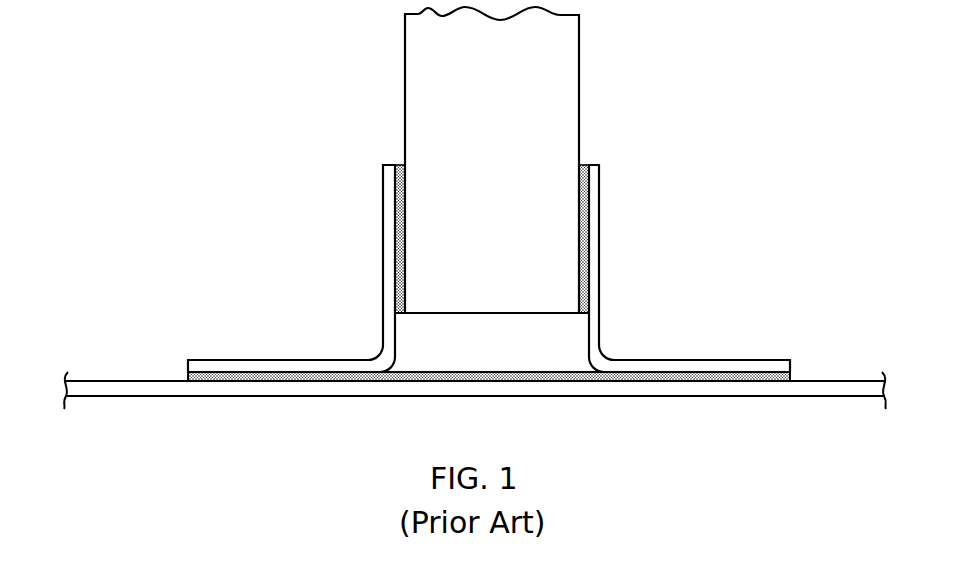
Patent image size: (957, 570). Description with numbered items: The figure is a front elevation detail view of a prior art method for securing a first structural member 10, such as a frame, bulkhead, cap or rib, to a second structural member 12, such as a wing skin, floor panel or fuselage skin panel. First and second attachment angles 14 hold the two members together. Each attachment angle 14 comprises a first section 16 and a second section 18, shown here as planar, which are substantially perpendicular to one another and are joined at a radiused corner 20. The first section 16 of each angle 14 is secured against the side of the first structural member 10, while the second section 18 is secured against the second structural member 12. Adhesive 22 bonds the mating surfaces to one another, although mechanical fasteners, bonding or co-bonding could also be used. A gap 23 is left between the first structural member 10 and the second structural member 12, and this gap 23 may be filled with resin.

The first structural member 10 is at (503, 178).
The second structural member 12 is at (840, 384).
The attachment angle 14 is at (392, 286).
The first section 16 is at (393, 222).
The second section 18 is at (253, 368).
The radiused corner 20 is at (384, 356).
The adhesive 22 is at (401, 165).
The gap 23 is at (503, 354).